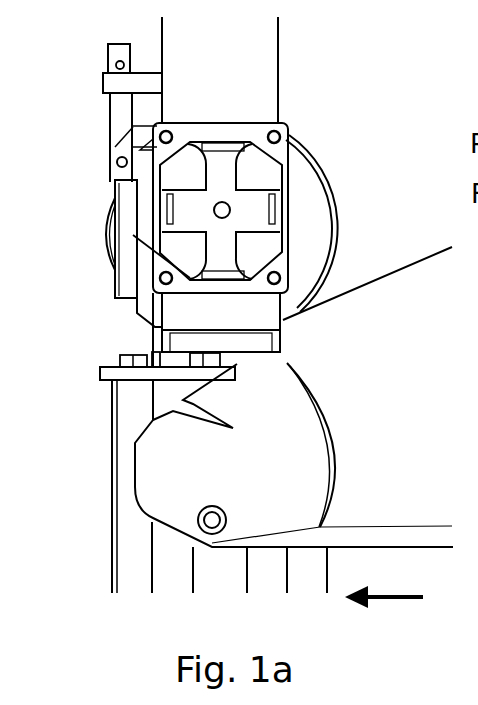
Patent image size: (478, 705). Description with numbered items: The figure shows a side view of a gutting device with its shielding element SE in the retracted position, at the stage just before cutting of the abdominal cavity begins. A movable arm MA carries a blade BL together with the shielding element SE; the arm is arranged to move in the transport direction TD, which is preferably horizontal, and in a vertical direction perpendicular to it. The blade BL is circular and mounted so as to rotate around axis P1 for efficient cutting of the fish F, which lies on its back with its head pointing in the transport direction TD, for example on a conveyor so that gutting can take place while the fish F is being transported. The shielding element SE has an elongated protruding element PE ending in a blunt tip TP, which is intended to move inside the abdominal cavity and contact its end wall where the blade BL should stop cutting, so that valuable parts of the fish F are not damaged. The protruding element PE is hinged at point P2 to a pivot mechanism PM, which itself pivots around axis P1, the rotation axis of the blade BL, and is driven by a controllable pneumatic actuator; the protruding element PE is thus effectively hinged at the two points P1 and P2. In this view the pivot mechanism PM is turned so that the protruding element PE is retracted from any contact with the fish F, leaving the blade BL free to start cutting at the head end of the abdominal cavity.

The movable arm MA is at (243, 80).
The shielding element SE is at (96, 79).
The point P2 is at (113, 154).
The pivot mechanism PM is at (145, 178).
The protruding element PE is at (122, 213).
The blunt tip TP is at (128, 303).
The axis P1 is at (222, 210).
The blade BL is at (308, 200).
The fish F is at (347, 445).
The transport direction TD is at (407, 598).